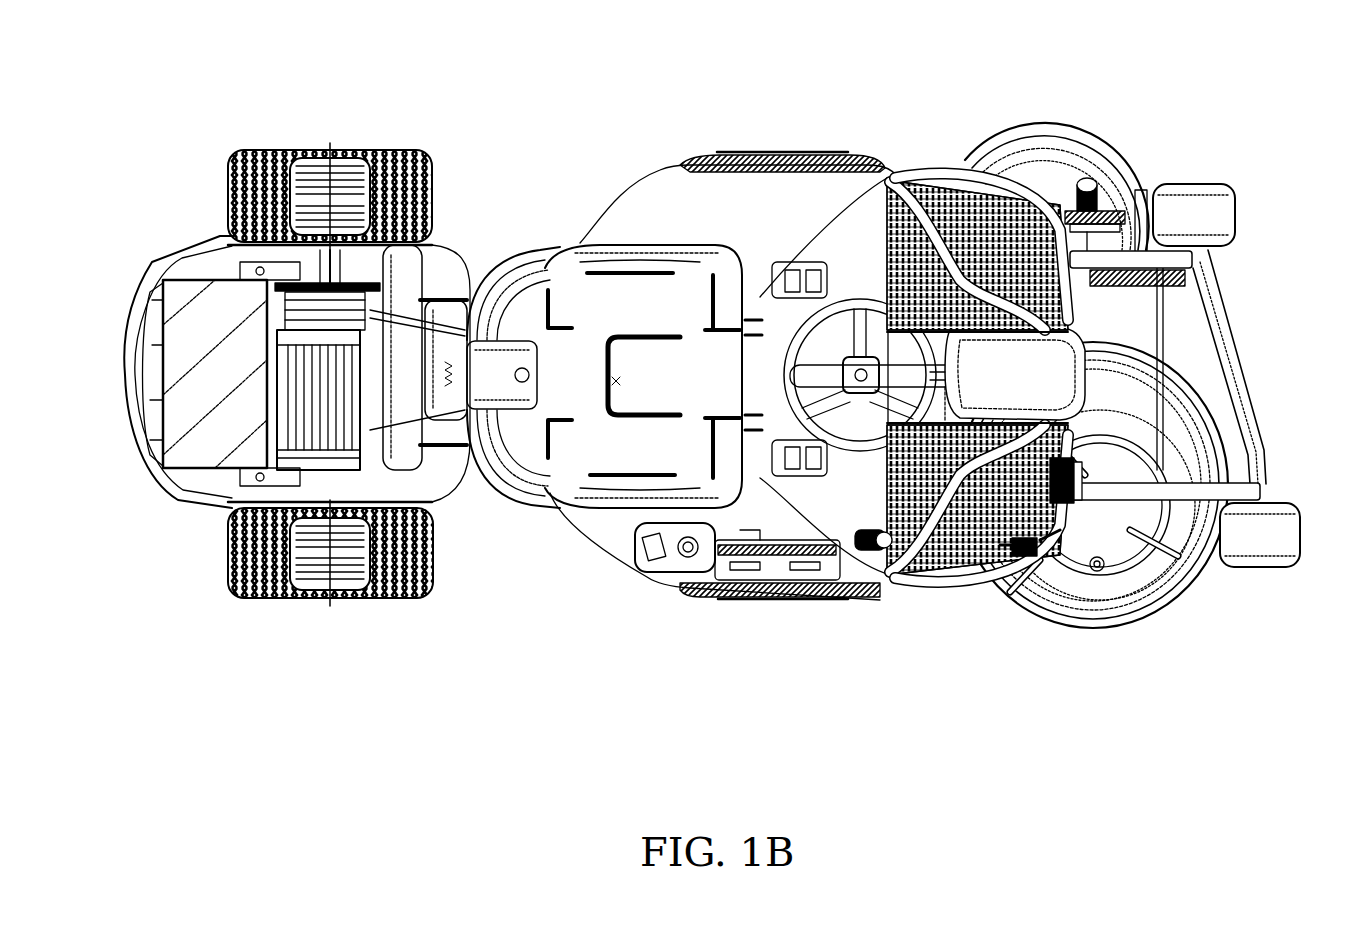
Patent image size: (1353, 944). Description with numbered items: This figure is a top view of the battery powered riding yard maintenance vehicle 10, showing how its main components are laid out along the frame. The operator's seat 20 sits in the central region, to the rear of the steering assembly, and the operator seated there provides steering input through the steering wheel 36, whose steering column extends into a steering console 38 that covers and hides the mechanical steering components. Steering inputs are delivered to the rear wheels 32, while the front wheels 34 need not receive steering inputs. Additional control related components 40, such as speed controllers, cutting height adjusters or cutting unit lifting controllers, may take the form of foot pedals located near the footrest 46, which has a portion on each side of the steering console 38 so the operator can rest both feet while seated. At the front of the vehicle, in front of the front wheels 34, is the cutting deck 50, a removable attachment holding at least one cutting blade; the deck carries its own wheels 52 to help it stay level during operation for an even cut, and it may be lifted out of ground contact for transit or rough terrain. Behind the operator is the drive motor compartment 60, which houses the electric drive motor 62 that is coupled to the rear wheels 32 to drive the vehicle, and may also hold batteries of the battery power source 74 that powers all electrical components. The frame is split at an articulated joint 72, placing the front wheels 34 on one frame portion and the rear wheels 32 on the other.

The battery powered riding yard maintenance vehicle 10 is at (1178, 84).
The seat 20 is at (616, 290).
The rear wheels 32 is at (410, 150).
The front wheels 34 is at (736, 155).
The steering wheel 36 is at (812, 272).
The steering console 38 is at (1075, 372).
The control related components 40 is at (1085, 183).
The footrest 46 is at (927, 185).
The cutting deck 50 is at (1090, 634).
The wheels 52 is at (1222, 192).
The drive motor compartment 60 is at (185, 222).
The electric drive motor 62 is at (268, 480).
The articulated joint 72 is at (452, 276).
The battery power source 74 is at (165, 281).